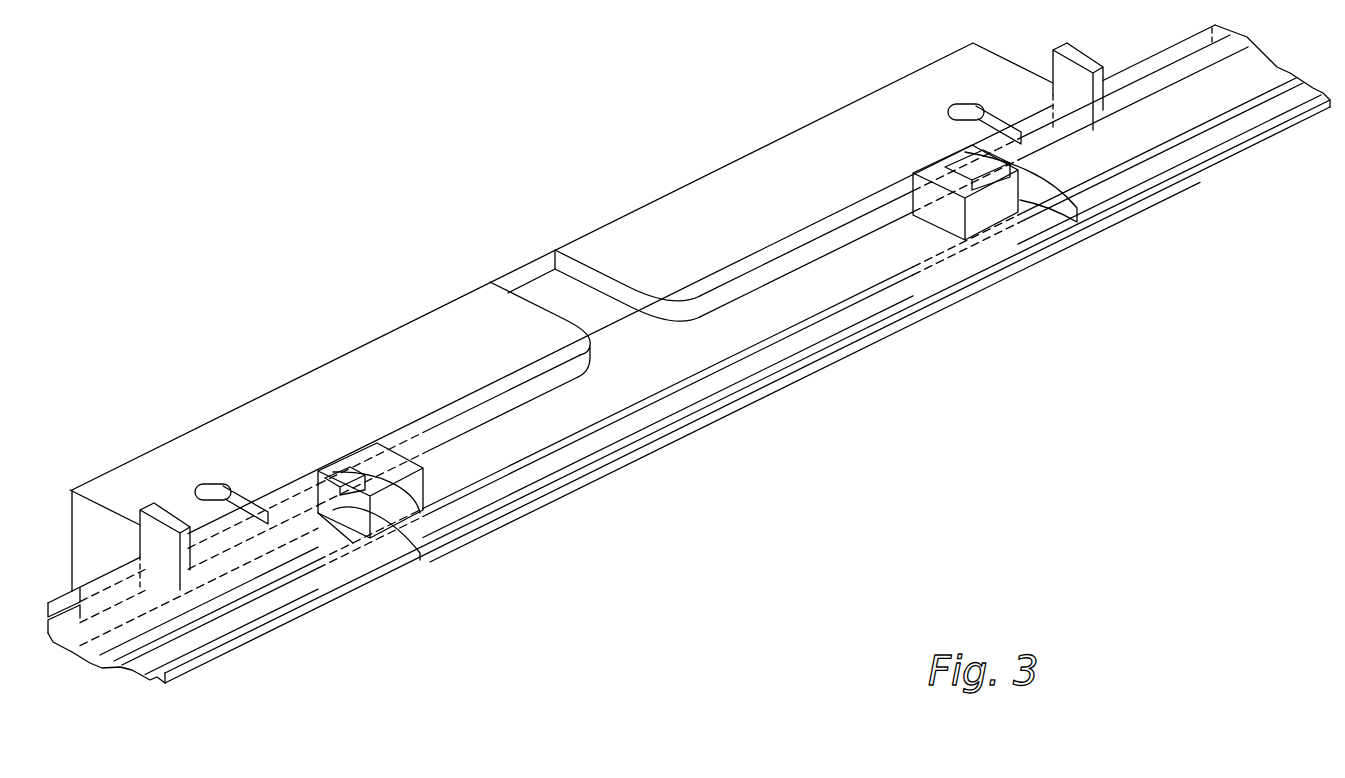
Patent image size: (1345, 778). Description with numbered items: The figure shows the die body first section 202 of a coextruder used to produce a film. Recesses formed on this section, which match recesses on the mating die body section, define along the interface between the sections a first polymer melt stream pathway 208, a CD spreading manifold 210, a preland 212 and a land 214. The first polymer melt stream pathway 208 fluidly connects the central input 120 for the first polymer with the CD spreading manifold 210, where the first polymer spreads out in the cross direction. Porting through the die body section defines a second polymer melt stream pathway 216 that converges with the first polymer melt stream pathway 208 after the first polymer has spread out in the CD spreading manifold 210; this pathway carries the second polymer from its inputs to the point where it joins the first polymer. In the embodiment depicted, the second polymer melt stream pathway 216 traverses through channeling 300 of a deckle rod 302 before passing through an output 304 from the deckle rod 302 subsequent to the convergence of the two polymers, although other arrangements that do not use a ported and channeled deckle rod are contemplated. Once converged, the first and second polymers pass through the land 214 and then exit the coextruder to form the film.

The central input 120 is at (540, 273).
The die body first section 202 is at (232, 230).
The first polymer melt stream pathway 208 is at (598, 296).
The CD spreading manifold 210 is at (497, 430).
The preland 212 is at (547, 468).
The land 214 is at (663, 430).
The second polymer melt stream pathway 216 is at (220, 488).
The channeling 300 is at (300, 505).
The deckle rod 302 is at (402, 537).
The output 304 is at (342, 483).